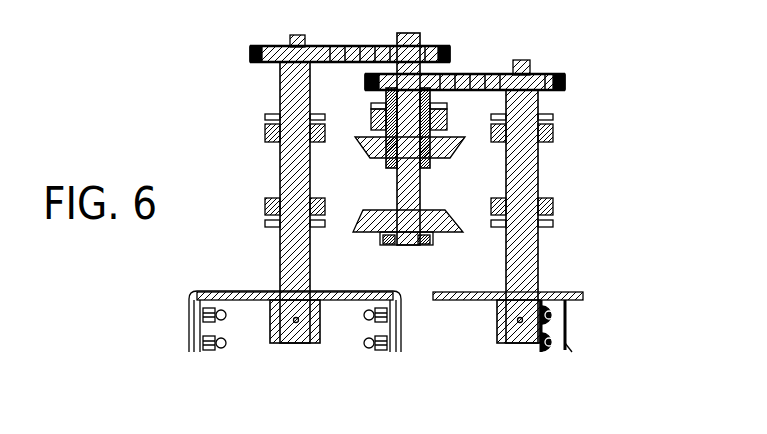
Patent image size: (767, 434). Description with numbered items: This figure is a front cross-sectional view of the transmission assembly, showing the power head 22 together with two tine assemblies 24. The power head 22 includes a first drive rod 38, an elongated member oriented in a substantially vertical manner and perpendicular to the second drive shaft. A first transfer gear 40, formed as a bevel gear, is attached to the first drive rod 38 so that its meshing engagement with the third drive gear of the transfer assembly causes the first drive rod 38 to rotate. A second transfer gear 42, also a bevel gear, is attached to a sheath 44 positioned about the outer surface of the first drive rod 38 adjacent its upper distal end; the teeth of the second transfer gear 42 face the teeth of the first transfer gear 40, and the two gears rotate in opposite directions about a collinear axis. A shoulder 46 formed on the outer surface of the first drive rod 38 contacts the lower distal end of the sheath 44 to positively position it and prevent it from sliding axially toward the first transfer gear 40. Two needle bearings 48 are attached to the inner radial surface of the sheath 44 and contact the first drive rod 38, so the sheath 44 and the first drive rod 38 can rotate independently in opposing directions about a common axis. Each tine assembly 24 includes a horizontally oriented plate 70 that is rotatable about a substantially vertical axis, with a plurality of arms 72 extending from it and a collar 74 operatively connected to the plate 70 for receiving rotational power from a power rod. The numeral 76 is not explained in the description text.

The power head 22 is at (652, 184).
The tine assembly 24 is at (132, 286).
The first drive rod 38 is at (410, 183).
The first transfer gear 40 is at (446, 234).
The second transfer gear 42 is at (367, 153).
The sheath 44 is at (437, 98).
The shoulder 46 is at (393, 160).
The needle bearing 48 is at (390, 97).
The plate 70 is at (250, 292).
The arm 72 is at (214, 294).
The collar 74 is at (190, 316).
The foot block 76 is at (317, 318).